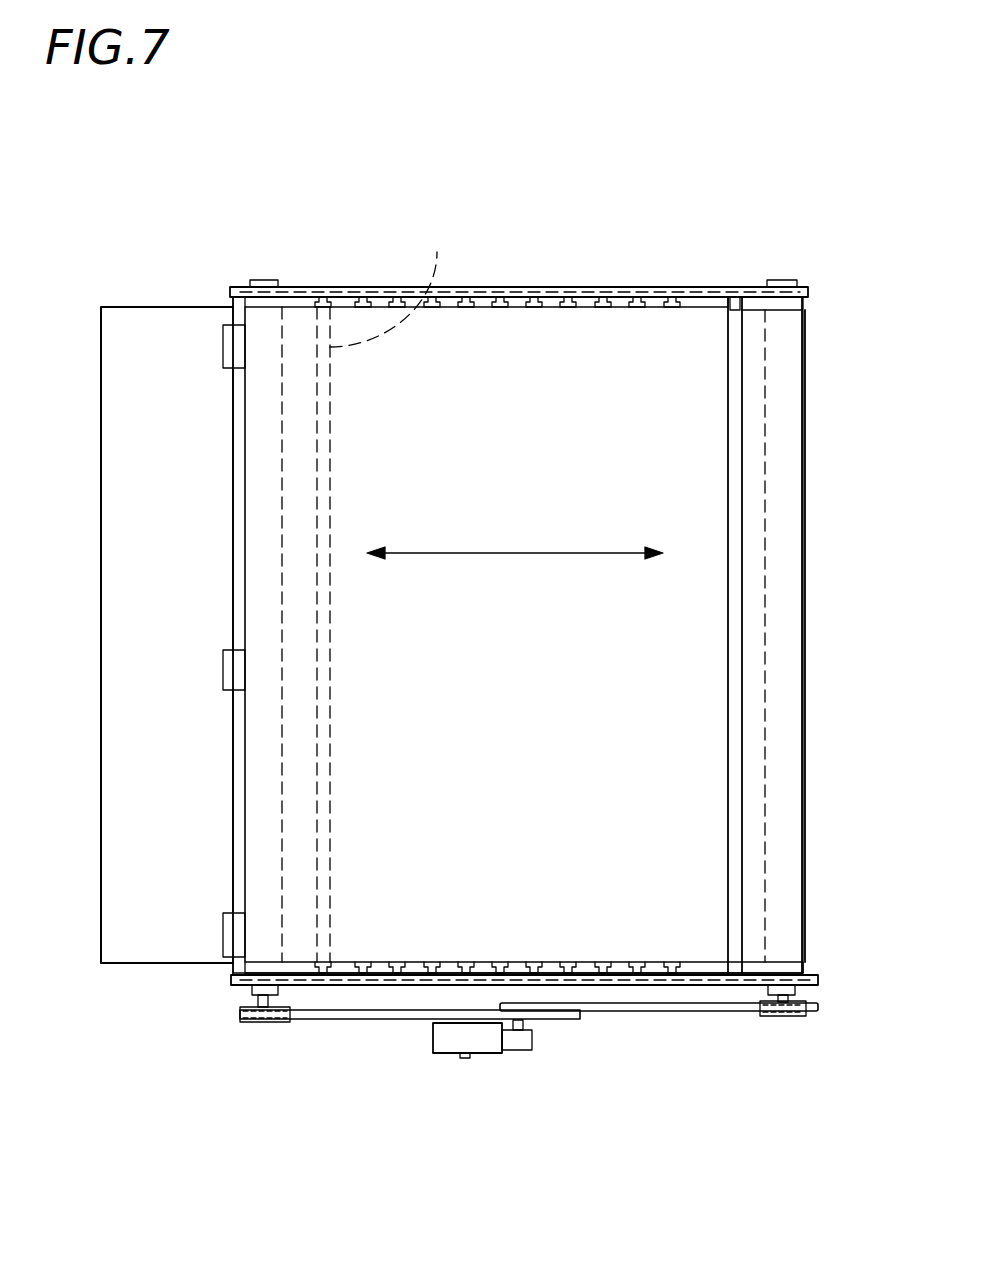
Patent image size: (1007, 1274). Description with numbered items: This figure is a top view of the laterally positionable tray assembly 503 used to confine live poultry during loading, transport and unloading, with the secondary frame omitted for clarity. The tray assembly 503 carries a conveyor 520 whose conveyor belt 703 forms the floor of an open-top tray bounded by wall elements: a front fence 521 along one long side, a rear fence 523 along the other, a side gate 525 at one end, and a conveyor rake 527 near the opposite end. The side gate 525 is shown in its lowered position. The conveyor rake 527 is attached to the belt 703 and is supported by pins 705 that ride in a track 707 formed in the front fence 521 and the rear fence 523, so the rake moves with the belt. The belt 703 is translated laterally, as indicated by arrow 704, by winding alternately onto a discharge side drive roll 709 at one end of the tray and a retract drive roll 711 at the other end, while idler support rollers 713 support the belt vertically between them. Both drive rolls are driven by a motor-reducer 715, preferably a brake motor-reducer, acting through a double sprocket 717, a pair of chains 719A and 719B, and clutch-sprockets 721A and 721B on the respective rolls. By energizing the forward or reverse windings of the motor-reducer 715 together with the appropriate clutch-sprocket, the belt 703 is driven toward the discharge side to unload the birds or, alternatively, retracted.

The tray assembly 503 is at (626, 120).
The conveyor 520 is at (590, 290).
The front fence 521 is at (300, 288).
The rear fence 523 is at (345, 985).
The side gate 525 is at (150, 306).
The conveyor rake 527 is at (727, 320).
The conveyor belt 703 is at (485, 297).
The arrow 704 is at (515, 538).
The pins 705 is at (752, 300).
The track 707 is at (330, 297).
The discharge side drive roll 709 is at (238, 893).
The retract drive roll 711 is at (805, 362).
The idler support rollers 713 is at (381, 297).
The motor-reducer 715 is at (470, 1058).
The double sprocket 717 is at (535, 1015).
The chain 719A is at (392, 1020).
The chain 719B is at (628, 1012).
The clutch-sprocket 721A is at (255, 1022).
The clutch-sprocket 721B is at (785, 1018).